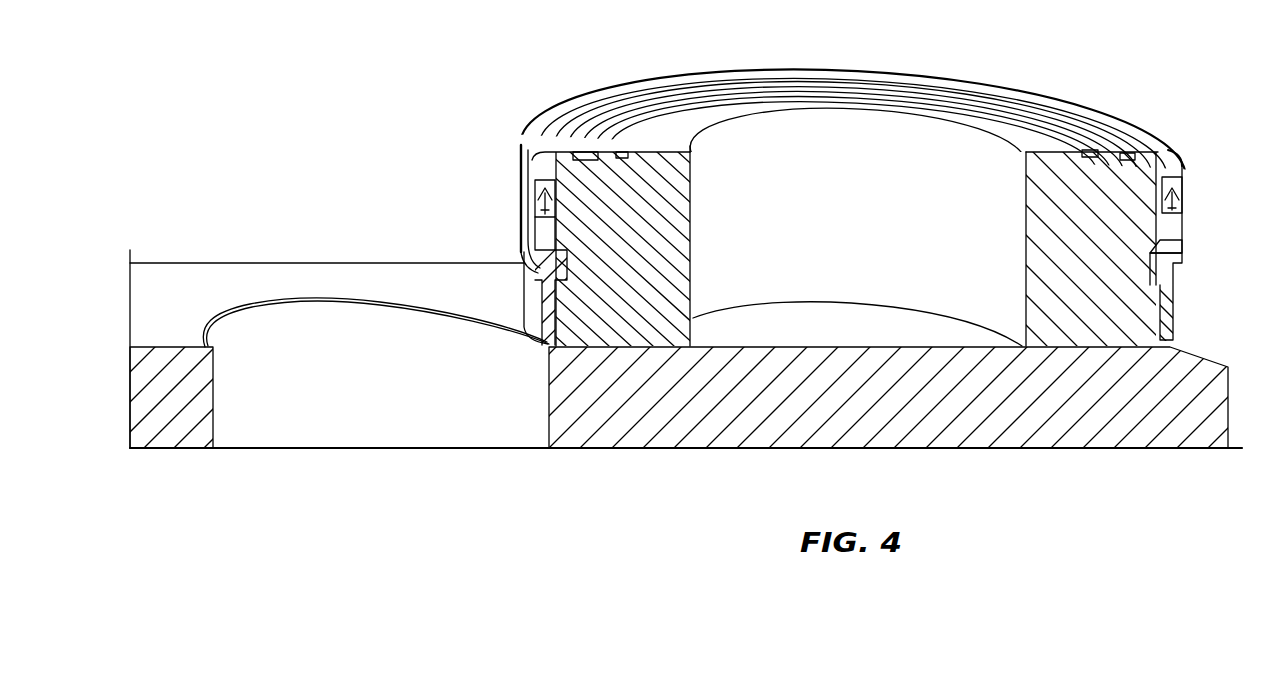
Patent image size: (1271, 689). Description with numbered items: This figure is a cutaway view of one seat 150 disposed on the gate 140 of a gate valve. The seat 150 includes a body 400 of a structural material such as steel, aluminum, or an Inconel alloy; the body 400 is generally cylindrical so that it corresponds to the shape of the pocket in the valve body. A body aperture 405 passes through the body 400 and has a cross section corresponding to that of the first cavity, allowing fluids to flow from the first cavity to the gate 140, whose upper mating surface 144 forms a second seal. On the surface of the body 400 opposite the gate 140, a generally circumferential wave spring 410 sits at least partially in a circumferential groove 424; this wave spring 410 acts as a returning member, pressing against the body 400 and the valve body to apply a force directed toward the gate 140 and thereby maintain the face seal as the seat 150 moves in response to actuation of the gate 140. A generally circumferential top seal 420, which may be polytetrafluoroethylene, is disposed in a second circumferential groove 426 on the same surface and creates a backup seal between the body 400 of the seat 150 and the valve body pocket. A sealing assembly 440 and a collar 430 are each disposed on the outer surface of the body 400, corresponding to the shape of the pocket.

The gate 140 is at (197, 288).
The upper mating surface 144 is at (302, 287).
The seat 150 is at (318, 149).
The body 400 is at (620, 308).
The body aperture 405 is at (935, 150).
The wave spring 410 is at (578, 125).
The top seal 420 is at (617, 118).
The circumferential groove 424 is at (1130, 168).
The second circumferential groove 426 is at (1097, 165).
The collar 430 is at (517, 287).
The sealing assembly 440 is at (512, 183).